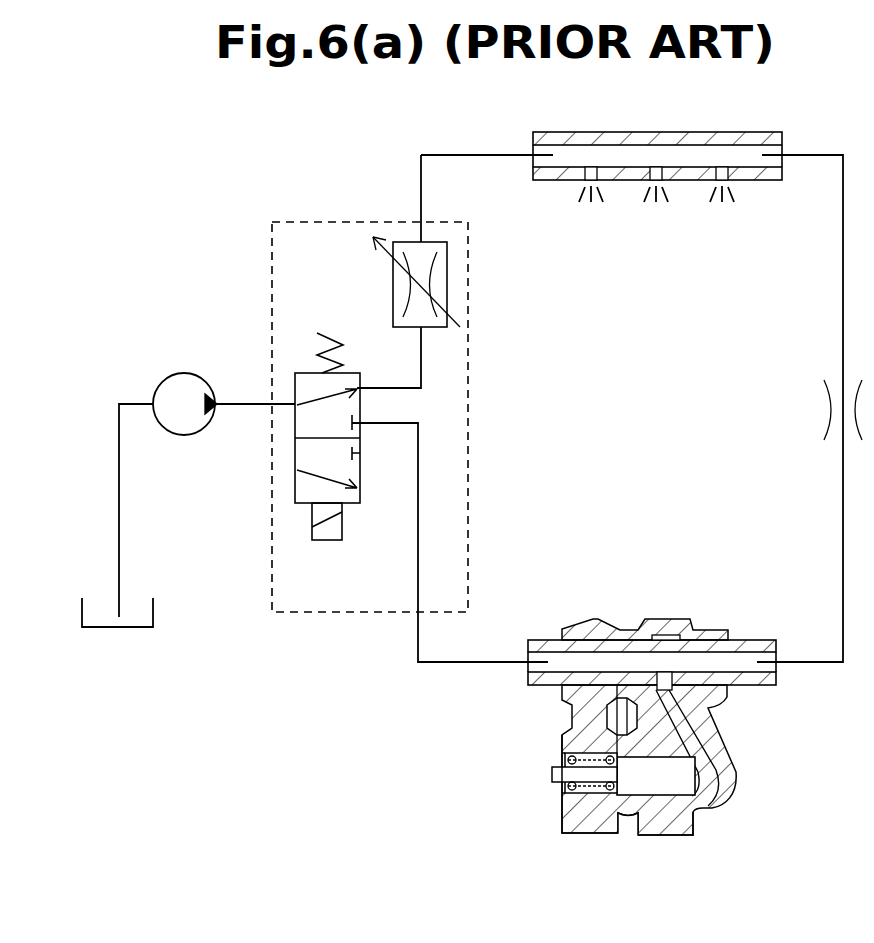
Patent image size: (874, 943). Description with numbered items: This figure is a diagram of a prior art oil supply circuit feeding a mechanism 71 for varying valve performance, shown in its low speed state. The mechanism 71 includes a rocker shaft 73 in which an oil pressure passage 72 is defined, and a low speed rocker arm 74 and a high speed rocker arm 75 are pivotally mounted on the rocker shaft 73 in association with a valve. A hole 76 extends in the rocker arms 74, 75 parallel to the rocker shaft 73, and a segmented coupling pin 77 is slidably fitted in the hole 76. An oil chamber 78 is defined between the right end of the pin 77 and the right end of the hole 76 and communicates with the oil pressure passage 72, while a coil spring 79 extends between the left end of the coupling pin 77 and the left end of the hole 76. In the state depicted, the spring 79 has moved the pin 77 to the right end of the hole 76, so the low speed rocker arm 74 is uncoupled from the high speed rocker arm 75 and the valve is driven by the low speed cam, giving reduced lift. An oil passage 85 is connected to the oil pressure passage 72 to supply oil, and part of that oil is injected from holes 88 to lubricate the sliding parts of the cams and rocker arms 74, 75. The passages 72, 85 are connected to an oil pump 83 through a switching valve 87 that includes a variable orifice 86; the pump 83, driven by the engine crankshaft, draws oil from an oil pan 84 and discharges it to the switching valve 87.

The mechanism for varying valve performance 71 is at (675, 754).
The oil pressure passage 72 is at (778, 648).
The rocker shaft 73 is at (776, 683).
The low speed rocker arm 74 is at (692, 838).
The high speed rocker arm 75 is at (562, 833).
The hole 76 is at (628, 815).
The segmented coupling pin 77 is at (712, 805).
The oil chamber 78 is at (710, 775).
The coil spring 79 is at (562, 757).
The oil pump 83 is at (167, 377).
The oil pan 84 is at (153, 617).
The oil passage 85 is at (782, 140).
The variable orifice 86 is at (447, 280).
The switching valve 87 is at (305, 218).
The holes 88 is at (590, 167).